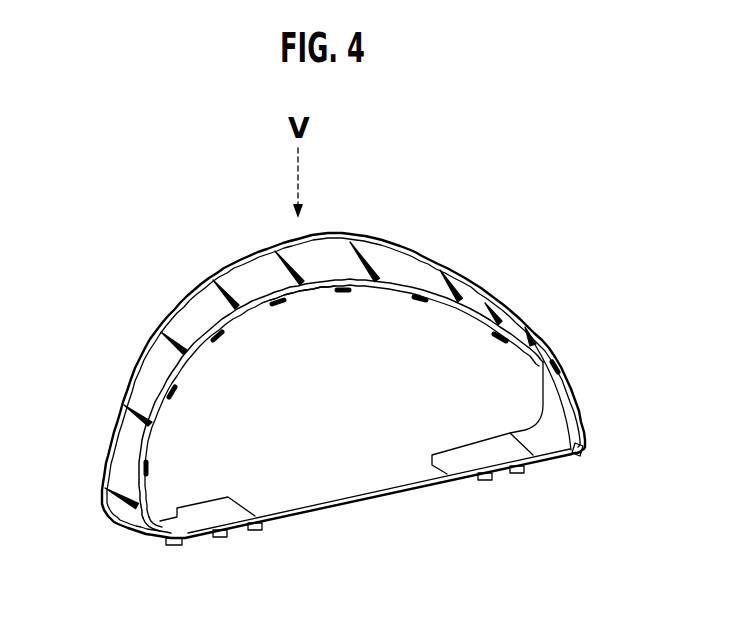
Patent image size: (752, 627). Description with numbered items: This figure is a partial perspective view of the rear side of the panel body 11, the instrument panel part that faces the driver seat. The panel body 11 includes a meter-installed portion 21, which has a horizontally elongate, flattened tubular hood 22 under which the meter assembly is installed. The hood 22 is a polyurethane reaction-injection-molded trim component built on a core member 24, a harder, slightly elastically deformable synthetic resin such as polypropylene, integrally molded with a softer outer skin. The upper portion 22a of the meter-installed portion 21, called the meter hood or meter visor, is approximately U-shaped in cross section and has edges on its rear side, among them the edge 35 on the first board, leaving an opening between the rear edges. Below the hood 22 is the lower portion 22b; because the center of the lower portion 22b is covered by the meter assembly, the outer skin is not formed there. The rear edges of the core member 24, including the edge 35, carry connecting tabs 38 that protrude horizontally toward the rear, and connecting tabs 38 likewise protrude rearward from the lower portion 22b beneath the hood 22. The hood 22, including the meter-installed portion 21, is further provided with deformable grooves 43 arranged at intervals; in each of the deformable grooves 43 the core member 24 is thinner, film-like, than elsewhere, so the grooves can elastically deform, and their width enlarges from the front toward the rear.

The panel body 11 is at (222, 262).
The meter-installed portion 21 is at (315, 293).
The hood 22 is at (320, 248).
The upper portion 22a is at (282, 236).
The lower portion 22b is at (352, 504).
The core member 24 is at (402, 252).
The edge 35 is at (383, 284).
The connecting tabs 38 is at (557, 367).
The deformable grooves 43 is at (267, 265).